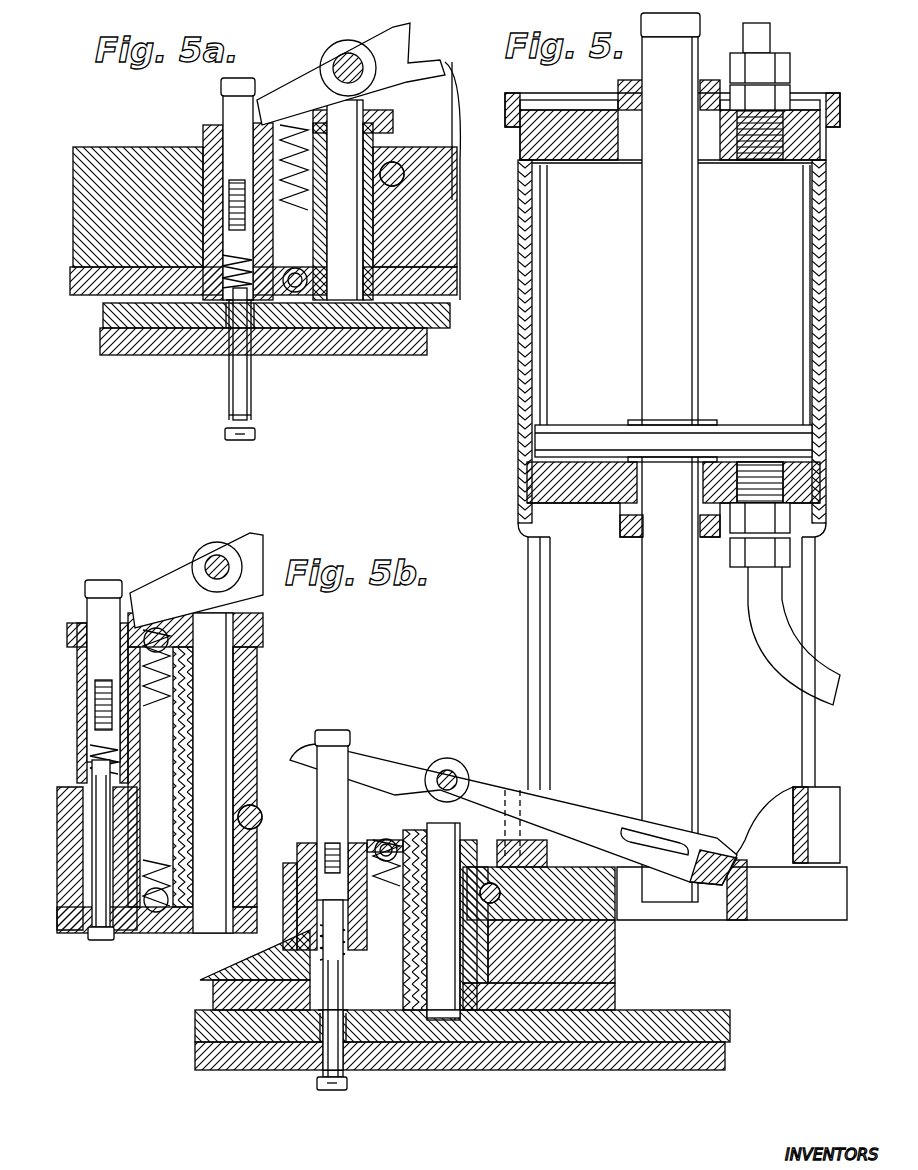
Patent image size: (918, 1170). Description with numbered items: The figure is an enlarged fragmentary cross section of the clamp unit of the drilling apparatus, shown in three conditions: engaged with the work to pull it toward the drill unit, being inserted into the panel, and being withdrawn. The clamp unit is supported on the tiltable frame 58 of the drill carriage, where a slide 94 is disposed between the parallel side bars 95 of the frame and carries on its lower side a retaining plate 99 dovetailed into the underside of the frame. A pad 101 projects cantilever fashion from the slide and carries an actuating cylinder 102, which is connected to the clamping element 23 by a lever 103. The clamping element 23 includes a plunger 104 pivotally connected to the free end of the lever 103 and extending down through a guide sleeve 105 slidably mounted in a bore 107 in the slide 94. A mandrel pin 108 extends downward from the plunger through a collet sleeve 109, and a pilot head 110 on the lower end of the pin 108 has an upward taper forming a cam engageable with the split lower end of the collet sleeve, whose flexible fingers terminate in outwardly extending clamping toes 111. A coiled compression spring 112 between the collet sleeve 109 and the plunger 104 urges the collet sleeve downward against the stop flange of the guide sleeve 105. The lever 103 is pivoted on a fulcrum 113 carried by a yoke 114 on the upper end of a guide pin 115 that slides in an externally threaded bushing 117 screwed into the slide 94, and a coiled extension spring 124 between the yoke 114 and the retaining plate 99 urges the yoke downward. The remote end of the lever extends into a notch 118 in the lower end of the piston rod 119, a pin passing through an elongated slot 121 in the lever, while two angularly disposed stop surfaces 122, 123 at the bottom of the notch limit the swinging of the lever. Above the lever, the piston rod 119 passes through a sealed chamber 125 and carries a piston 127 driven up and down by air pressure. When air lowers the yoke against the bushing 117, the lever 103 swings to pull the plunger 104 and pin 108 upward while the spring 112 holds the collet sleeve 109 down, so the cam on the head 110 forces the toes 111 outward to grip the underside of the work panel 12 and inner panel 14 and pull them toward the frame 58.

In FIG. 5A, the work panel 12 is at (112, 318).
In FIG. 5, the work panel 12 is at (722, 1022).
In FIG. 5A, the inner panel 14 is at (342, 336).
In FIG. 5, the inner panel 14 is at (598, 1062).
In FIG. 5A, the clamping element 23 is at (212, 402).
In FIG. 5, the clamping element 23 is at (300, 1096).
In FIG. 5B, the clamping element 23 is at (108, 950).
In FIG. 5, the tiltable frame 58 is at (630, 965).
In FIG. 5A, the slide 94 is at (444, 165).
In FIG. 5, the slide 94 is at (500, 956).
In FIG. 5, the side bars 95 is at (615, 980).
In FIG. 5, the retaining plate 99 is at (512, 1000).
In FIG. 5, the pad 101 is at (770, 910).
In FIG. 5A, the actuating cylinder 102 is at (452, 181).
In FIG. 5, the actuating cylinder 102 is at (826, 295).
In FIG. 5A, the lever 103 is at (300, 80).
In FIG. 5, the lever 103 is at (560, 800).
In FIG. 5B, the lever 103 is at (196, 580).
In FIG. 5A, the plunger 104 is at (240, 155).
In FIG. 5, the plunger 104 is at (340, 742).
In FIG. 5B, the plunger 104 is at (100, 585).
In FIG. 5A, the guide sleeve 105 is at (212, 215).
In FIG. 5, the guide sleeve 105 is at (240, 985).
In FIG. 5B, the guide sleeve 105 is at (75, 655).
In FIG. 5A, the bore 107 is at (214, 186).
In FIG. 5, the bore 107 is at (300, 970).
In FIG. 5B, the bore 107 is at (85, 930).
In FIG. 5A, the mandrel pin 108 is at (240, 378).
In FIG. 5, the mandrel pin 108 is at (322, 1050).
In FIG. 5B, the mandrel pin 108 is at (112, 790).
In FIG. 5A, the collet sleeve 109 is at (222, 352).
In FIG. 5, the collet sleeve 109 is at (350, 1030).
In FIG. 5B, the collet sleeve 109 is at (158, 577).
In FIG. 5A, the pilot head 110 is at (256, 434).
In FIG. 5, the pilot head 110 is at (330, 1092).
In FIG. 5B, the pilot head 110 is at (108, 940).
In FIG. 5A, the clamping toes 111 is at (252, 412).
In FIG. 5, the clamping toes 111 is at (345, 1078).
In FIG. 5A, the coiled compression spring 112 is at (226, 282).
In FIG. 5, the coiled compression spring 112 is at (318, 930).
In FIG. 5B, the coiled compression spring 112 is at (133, 727).
In FIG. 5A, the fulcrum 113 is at (348, 55).
In FIG. 5, the fulcrum 113 is at (447, 768).
In FIG. 5B, the fulcrum 113 is at (217, 553).
In FIG. 5A, the yoke 114 is at (395, 98).
In FIG. 5, the yoke 114 is at (410, 840).
In FIG. 5B, the yoke 114 is at (258, 608).
In FIG. 5A, the guide pin 115 is at (360, 275).
In FIG. 5, the guide pin 115 is at (440, 1040).
In FIG. 5B, the guide pin 115 is at (222, 712).
In FIG. 5A, the bushing 117 is at (404, 178).
In FIG. 5, the bushing 117 is at (472, 902).
In FIG. 5B, the bushing 117 is at (255, 830).
In FIG. 5, the notch 118 is at (663, 890).
In FIG. 5, the piston rod 119 is at (683, 657).
In FIG. 5, the elongated slot 121 is at (630, 830).
In FIG. 5, the stop surface 122 is at (705, 815).
In FIG. 5, the stop surface 123 is at (690, 830).
In FIG. 5A, the coiled extension spring 124 is at (302, 222).
In FIG. 5, the coiled extension spring 124 is at (386, 862).
In FIG. 5B, the coiled extension spring 124 is at (175, 670).
In FIG. 5, the sealed chamber 125 is at (762, 280).
In FIG. 5, the piston 127 is at (600, 430).